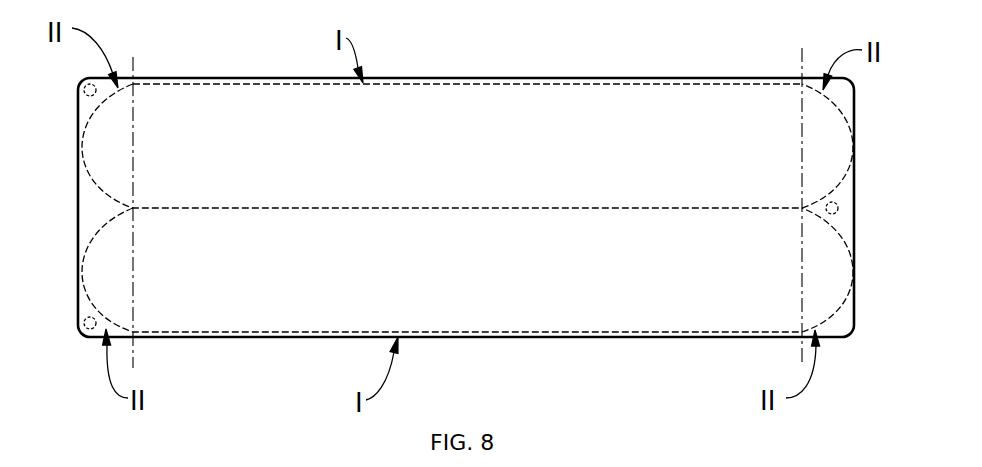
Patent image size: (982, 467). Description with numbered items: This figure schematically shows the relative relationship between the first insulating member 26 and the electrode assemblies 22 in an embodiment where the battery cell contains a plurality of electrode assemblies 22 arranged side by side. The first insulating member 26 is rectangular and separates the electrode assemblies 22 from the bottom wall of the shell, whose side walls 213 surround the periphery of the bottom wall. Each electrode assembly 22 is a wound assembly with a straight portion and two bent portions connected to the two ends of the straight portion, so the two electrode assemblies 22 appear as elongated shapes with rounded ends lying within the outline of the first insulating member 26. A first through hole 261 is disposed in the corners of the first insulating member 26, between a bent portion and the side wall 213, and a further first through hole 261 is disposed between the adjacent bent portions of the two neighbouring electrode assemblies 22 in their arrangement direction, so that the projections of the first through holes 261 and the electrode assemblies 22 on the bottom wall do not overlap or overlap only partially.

The electrode assembly 22 is at (540, 125).
The side wall 213 is at (695, 78).
The first through hole 261 is at (86, 86).
The first insulating member 26 is at (833, 333).